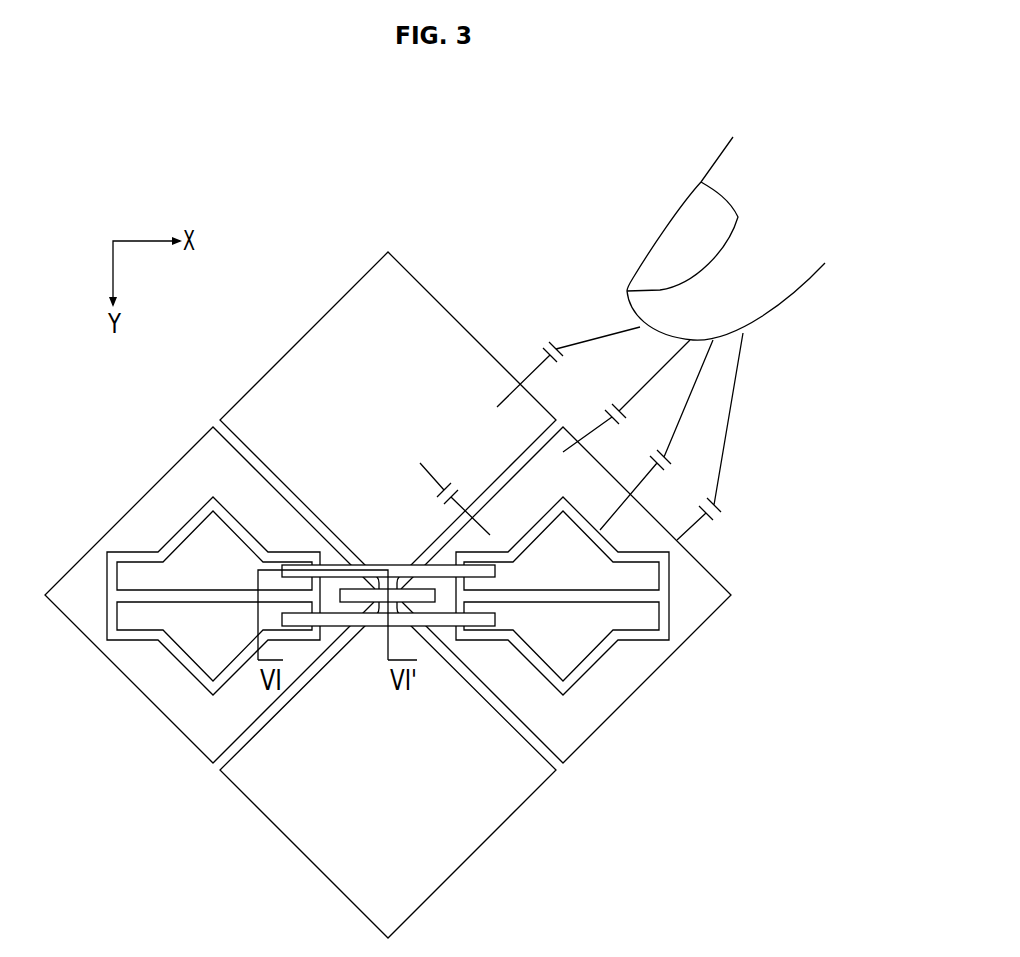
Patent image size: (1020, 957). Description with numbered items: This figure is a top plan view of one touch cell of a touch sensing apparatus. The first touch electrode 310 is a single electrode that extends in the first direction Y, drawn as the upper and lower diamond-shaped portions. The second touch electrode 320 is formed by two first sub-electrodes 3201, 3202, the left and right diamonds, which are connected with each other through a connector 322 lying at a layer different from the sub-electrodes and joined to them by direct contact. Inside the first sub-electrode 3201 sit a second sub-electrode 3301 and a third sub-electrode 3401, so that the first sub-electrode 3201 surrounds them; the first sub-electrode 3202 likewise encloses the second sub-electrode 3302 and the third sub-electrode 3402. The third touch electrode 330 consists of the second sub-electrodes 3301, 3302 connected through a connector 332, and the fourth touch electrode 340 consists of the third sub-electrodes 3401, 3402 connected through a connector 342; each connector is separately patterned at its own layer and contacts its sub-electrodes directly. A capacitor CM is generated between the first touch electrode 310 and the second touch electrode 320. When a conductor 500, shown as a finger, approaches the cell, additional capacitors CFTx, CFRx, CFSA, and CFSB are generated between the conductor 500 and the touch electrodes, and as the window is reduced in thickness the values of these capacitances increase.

The first touch electrode 310 is at (333, 310).
The second touch electrode 320 is at (388, 577).
The first sub-electrode 3201 is at (210, 595).
The first sub-electrode 3202 is at (566, 595).
The connector 322 is at (348, 590).
The third touch electrode 330 is at (382, 568).
The second sub-electrode 3301 is at (214, 550).
The second sub-electrode 3302 is at (561, 550).
The connector 332 is at (388, 565).
The fourth touch electrode 340 is at (378, 675).
The third sub-electrode 3401 is at (214, 641).
The third sub-electrode 3402 is at (561, 641).
The connector 342 is at (375, 628).
The conductor 500 is at (657, 208).
The capacitor CM is at (440, 486).
The capacitor CFTx is at (568, 359).
The capacitor CFRx is at (626, 396).
The capacitor CFSA is at (656, 435).
The capacitor CFSB is at (726, 436).